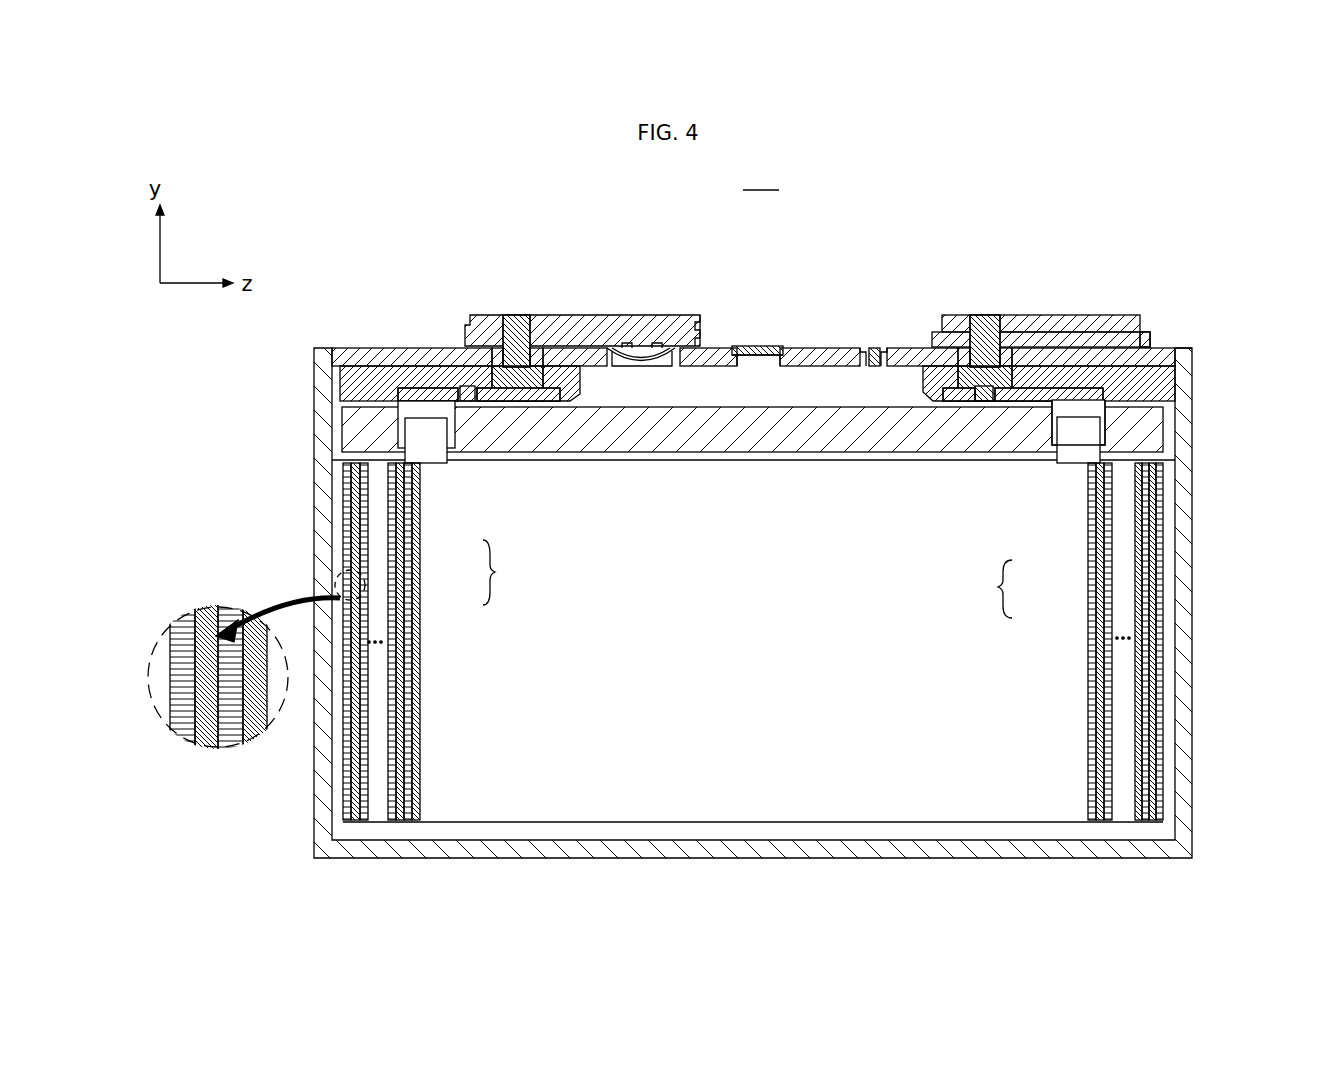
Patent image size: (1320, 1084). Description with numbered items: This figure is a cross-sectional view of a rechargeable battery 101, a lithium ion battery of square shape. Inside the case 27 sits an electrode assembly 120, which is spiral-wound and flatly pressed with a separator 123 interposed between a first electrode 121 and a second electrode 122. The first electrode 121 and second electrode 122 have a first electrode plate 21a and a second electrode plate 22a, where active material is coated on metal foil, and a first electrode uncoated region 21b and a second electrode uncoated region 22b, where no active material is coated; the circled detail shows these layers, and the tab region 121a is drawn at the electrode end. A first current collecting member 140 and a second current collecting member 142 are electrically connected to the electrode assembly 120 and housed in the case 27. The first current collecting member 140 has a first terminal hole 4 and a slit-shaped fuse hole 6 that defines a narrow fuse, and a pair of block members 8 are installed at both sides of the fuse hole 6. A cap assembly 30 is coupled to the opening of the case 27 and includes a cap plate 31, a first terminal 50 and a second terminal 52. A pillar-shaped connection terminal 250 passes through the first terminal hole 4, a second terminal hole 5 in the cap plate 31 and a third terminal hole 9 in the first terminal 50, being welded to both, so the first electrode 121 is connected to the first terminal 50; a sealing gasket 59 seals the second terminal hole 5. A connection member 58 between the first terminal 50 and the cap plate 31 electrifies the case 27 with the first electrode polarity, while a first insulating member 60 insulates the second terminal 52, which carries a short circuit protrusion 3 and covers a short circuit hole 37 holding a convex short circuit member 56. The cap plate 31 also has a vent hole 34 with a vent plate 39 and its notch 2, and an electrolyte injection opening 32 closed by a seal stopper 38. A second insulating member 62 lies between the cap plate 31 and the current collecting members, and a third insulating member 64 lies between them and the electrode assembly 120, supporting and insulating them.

The rechargeable battery 101 is at (761, 179).
The case 27 is at (1185, 580).
The cap plate 31 is at (1178, 318).
The second insulating member 62 is at (332, 378).
The cap assembly 30 is at (722, 346).
The second current collecting member 142 is at (468, 358).
The block member 8 is at (440, 375).
The second terminal 52 is at (487, 320).
The first insulating member 60 is at (700, 325).
The first terminal 50 is at (1040, 318).
The first current collecting member 140 is at (1098, 320).
The connection member 58 is at (1125, 322).
The connection terminal 250 is at (515, 320).
The second terminal hole 5 is at (550, 332).
The third terminal hole 9 is at (526, 332).
The sealing gasket 59 is at (470, 350).
The short circuit hole 37 is at (625, 352).
The short circuit protrusion 3 is at (630, 345).
The short circuit member 56 is at (655, 345).
The vent hole 34 is at (766, 345).
The notch 2 is at (757, 345).
The vent plate 39 is at (788, 346).
The electrolyte injection opening 32 is at (872, 350).
The seal stopper 38 is at (879, 352).
The first terminal hole 4 is at (515, 396).
The fuse hole 6 is at (472, 402).
The third insulating member 64 is at (634, 440).
The second electrode uncoated region 22b is at (427, 452).
The first electrode uncoated region 21b is at (1077, 452).
The positive electrode tab 121a is at (1085, 431).
The second electrode 122 is at (439, 641).
The second electrode plate 22a is at (413, 580).
The first electrode 121 is at (1034, 641).
The first electrode plate 21a is at (1093, 594).
The separator 123 is at (232, 625).
The electrode assembly 120 is at (1056, 741).